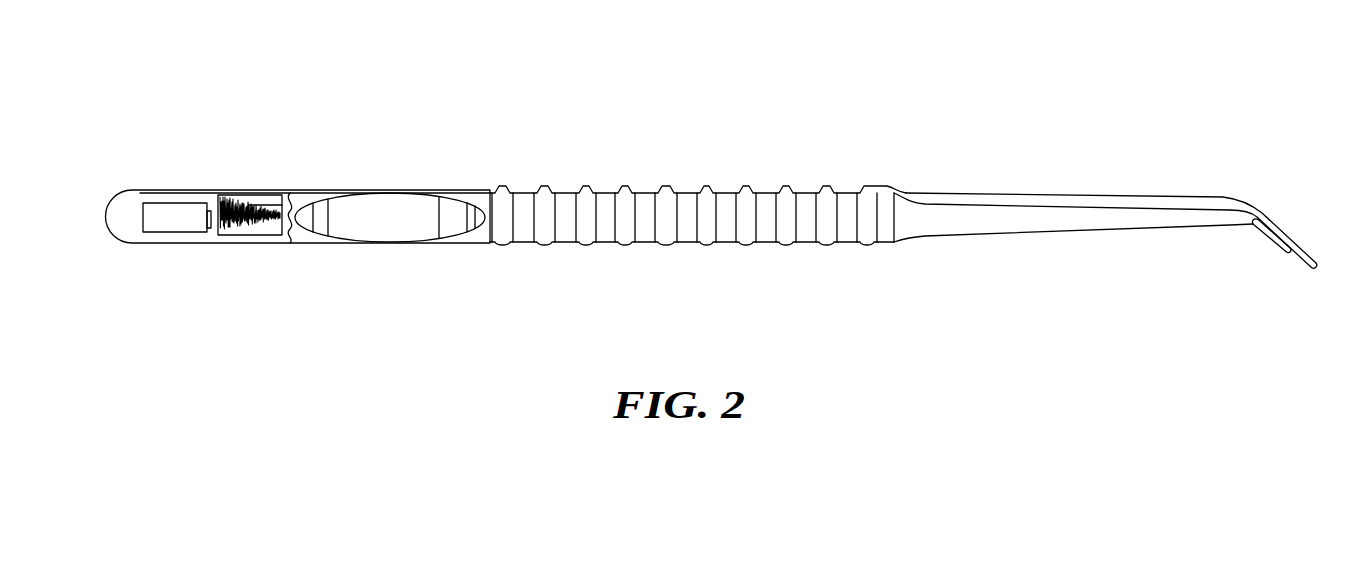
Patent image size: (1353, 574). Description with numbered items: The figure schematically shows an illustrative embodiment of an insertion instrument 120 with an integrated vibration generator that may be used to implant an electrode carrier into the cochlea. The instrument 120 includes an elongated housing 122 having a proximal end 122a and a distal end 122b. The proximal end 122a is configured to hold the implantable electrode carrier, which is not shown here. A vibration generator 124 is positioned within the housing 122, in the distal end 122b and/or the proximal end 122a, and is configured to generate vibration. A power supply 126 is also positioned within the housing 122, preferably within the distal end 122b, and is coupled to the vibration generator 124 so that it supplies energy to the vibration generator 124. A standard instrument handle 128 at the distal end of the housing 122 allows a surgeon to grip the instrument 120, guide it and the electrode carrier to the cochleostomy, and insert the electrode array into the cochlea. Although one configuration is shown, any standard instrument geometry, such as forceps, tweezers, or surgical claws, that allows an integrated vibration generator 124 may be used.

The insertion instrument 120 is at (732, 124).
The housing 122 is at (605, 200).
The proximal end 122a is at (1212, 178).
The distal end 122b is at (251, 170).
The vibration generator 124 is at (250, 228).
The power supply 126 is at (172, 222).
The instrument handle 128 is at (389, 226).